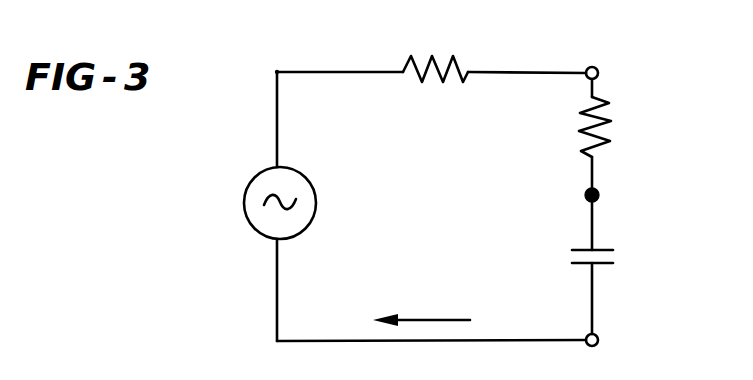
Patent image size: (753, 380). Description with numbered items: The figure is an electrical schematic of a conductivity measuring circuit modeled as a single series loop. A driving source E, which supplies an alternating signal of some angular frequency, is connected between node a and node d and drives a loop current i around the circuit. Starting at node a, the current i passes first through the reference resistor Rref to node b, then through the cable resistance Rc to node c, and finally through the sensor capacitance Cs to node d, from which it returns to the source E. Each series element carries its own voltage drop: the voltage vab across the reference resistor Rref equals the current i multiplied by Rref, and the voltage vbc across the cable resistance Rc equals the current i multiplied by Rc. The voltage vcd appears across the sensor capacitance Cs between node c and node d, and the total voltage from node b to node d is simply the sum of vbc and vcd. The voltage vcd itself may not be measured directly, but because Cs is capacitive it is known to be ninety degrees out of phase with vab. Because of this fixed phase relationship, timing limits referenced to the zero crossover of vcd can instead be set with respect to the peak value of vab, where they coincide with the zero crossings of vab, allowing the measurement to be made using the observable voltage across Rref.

The node a is at (261, 70).
The node b is at (608, 58).
The node c is at (607, 195).
The node d is at (609, 345).
The driving source E is at (256, 203).
The reference resistor Rref is at (432, 90).
The cable resistance Rc is at (565, 131).
The sensor capacitance Cs is at (565, 268).
The voltage across reference resistor vab is at (443, 25).
The voltage across cable resistance vbc is at (670, 129).
The voltage across sensor capacitance vcd is at (677, 270).
The loop current i is at (421, 305).